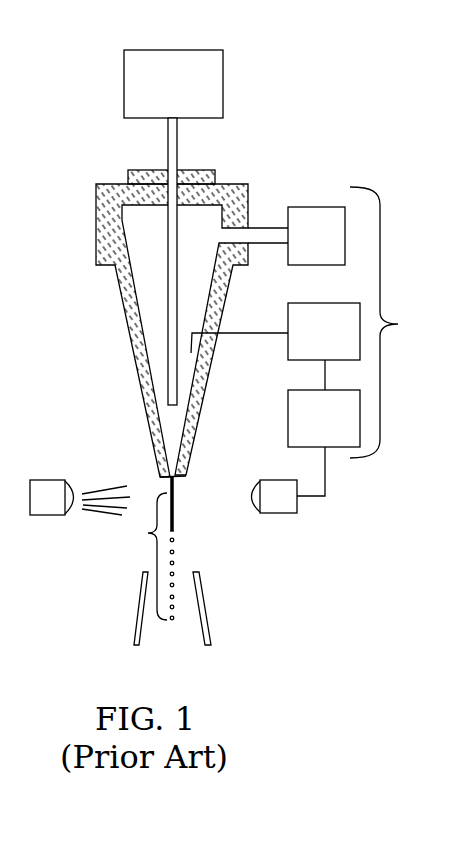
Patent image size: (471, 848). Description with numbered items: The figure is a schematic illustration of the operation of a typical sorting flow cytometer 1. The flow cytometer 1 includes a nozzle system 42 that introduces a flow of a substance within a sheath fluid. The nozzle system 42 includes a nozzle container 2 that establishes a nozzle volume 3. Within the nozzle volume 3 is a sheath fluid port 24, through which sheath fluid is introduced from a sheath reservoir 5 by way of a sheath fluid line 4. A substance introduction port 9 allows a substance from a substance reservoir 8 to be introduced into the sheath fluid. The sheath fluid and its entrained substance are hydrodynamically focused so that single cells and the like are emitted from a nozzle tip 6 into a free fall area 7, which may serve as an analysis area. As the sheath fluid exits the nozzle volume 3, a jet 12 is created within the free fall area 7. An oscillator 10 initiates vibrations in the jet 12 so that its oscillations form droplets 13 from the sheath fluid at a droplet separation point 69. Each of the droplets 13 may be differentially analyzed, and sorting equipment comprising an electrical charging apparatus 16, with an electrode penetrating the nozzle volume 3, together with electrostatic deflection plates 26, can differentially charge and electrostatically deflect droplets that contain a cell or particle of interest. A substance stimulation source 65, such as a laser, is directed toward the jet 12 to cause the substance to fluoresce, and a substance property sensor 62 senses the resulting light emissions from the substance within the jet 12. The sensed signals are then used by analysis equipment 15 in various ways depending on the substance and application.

The flow cytometer 1 is at (45, 29).
The nozzle container 2 is at (178, 330).
The nozzle volume 3 is at (192, 298).
The sheath fluid line 4 is at (250, 214).
The sheath reservoir 5 is at (309, 249).
The nozzle tip 6 is at (175, 479).
The free fall area 7 is at (150, 556).
The substance reservoir 8 is at (165, 94).
The substance introduction port 9 is at (168, 370).
The oscillator 10 is at (200, 170).
The jet 12 is at (177, 510).
The droplets 13 is at (175, 541).
The analysis equipment 15 is at (311, 428).
The electrical charging apparatus 16 is at (311, 341).
The sheath fluid port 24 is at (225, 236).
The electrostatic deflection plates 26 is at (141, 596).
The nozzle system 42 is at (313, 341).
The substance property sensor 62 is at (266, 511).
The substance stimulation source 65 is at (36, 511).
The droplet separation point 69 is at (175, 535).